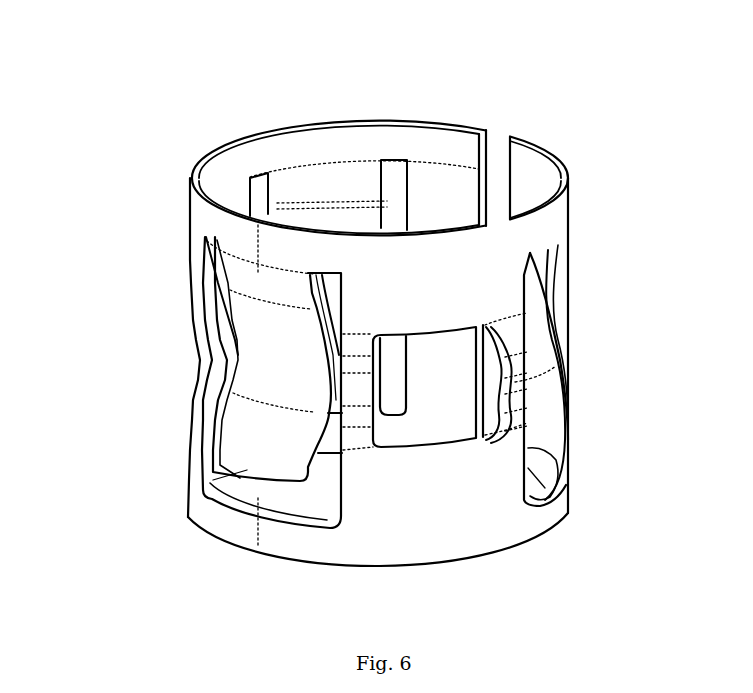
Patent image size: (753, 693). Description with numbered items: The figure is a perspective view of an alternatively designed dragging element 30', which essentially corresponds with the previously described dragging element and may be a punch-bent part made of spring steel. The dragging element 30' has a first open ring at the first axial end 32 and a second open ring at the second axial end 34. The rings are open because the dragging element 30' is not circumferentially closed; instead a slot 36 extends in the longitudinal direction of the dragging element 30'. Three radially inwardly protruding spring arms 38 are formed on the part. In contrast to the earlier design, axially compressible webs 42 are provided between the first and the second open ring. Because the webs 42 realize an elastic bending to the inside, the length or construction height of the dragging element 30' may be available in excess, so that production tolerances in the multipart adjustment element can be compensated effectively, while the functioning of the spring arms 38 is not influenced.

The dragging element 30' is at (430, 363).
The first axial end 32 is at (230, 540).
The second axial end 34 is at (205, 157).
The slot 36 is at (488, 163).
The spring arms 38 is at (250, 358).
The axially compressible webs 42 is at (560, 365).